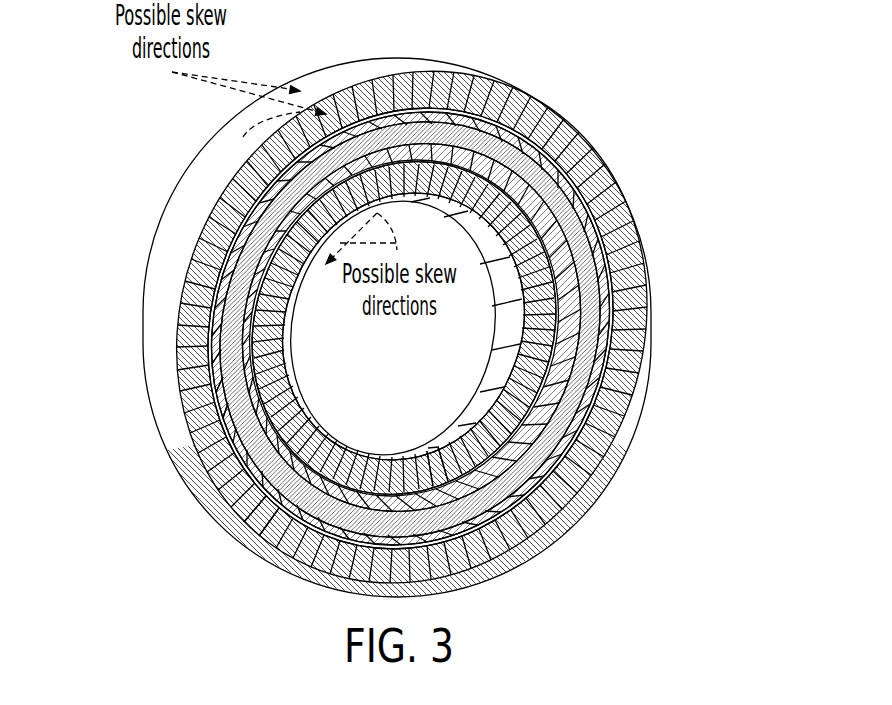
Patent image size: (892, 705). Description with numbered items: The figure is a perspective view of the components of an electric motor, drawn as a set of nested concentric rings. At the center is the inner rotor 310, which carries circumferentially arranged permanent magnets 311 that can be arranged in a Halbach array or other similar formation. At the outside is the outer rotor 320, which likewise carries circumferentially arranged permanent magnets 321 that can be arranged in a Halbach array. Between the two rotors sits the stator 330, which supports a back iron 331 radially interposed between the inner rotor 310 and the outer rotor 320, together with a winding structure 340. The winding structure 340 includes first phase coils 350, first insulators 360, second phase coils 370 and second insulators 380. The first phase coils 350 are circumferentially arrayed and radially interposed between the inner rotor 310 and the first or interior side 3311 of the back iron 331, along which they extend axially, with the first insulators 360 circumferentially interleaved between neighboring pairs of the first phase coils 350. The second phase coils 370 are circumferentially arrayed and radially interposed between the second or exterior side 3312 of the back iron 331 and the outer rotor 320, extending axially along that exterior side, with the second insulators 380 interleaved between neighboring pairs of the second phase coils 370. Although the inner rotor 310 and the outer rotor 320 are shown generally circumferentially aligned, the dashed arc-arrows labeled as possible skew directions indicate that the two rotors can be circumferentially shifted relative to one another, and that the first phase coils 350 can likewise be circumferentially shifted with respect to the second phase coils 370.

The inner rotor 310 is at (248, 258).
The permanent magnets 311 is at (430, 470).
The outer rotor 320 is at (240, 193).
The permanent magnets 321 is at (243, 508).
The stator 330 is at (457, 328).
The back iron 331 is at (215, 392).
The first or interior side of the back iron 3311 is at (548, 330).
The second or exterior side of the back iron 3312 is at (607, 303).
The winding structure 340 is at (245, 452).
The first phase coils 350 is at (293, 418).
The first insulators 360 is at (535, 372).
The second phase coils 370 is at (215, 335).
The second insulators 380 is at (205, 360).